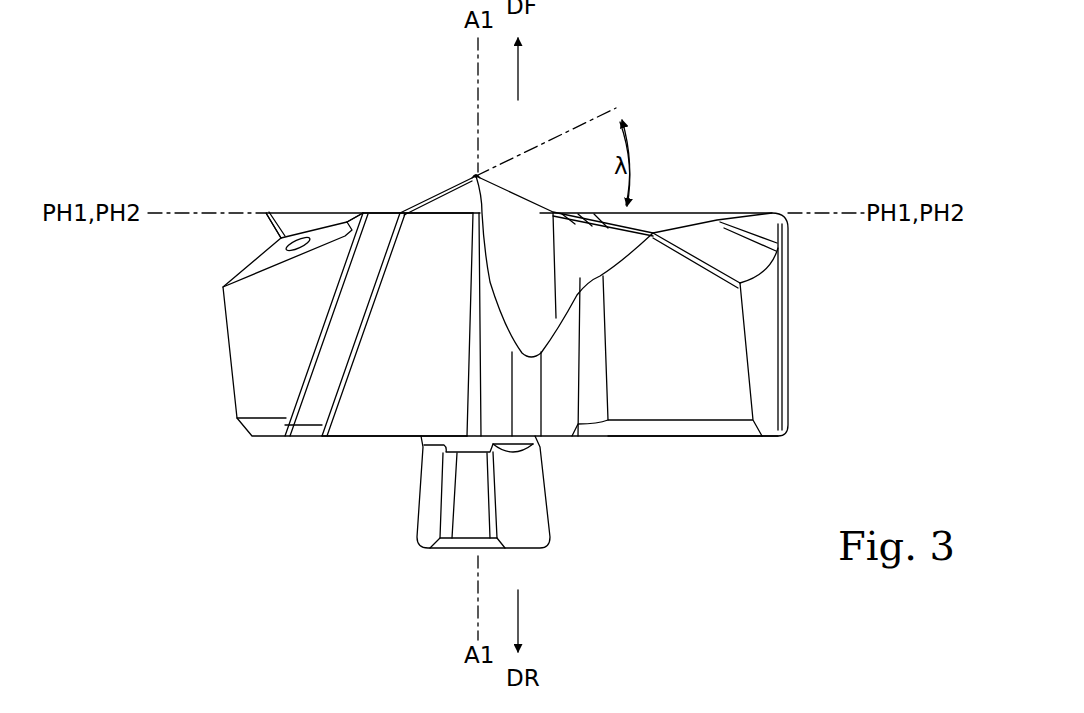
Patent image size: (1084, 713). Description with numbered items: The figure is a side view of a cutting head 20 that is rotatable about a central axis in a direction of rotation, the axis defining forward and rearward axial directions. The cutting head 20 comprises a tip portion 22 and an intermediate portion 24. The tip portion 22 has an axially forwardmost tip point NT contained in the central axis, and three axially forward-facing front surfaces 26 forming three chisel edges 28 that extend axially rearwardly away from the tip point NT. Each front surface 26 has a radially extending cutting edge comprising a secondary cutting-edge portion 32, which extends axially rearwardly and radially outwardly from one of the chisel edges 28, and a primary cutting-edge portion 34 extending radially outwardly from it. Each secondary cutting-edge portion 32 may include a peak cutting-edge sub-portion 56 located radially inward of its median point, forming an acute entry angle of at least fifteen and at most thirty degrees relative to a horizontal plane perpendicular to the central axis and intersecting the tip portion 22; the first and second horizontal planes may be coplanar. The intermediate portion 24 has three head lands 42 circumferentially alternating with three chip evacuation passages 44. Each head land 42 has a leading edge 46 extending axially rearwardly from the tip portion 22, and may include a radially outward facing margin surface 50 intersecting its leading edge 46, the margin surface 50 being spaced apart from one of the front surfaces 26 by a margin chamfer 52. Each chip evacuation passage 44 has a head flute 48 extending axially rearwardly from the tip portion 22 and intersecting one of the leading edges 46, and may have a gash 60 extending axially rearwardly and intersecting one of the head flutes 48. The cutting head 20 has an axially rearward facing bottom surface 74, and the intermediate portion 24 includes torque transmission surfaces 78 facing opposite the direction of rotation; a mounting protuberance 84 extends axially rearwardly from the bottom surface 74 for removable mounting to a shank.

The cutting head 20 is at (652, 133).
The tip portion 22 is at (698, 192).
The intermediate portion 24 is at (810, 325).
The front surface 26 is at (655, 225).
The chisel edge 28 is at (470, 173).
The secondary cutting-edge portion 32 is at (460, 187).
The primary cutting-edge portion 34 is at (268, 212).
The head land 42 is at (266, 322).
The chip evacuation passage 44 is at (421, 380).
The leading edge 46 is at (328, 405).
The head flute 48 is at (418, 266).
The margin surface 50 is at (322, 384).
The margin chamfer 52 is at (372, 209).
The peak cutting-edge sub-portion 56 is at (400, 212).
The gash 60 is at (564, 306).
The bottom surface 74 is at (686, 441).
The torque transmission surface 78 is at (667, 359).
The mounting protuberance 84 is at (522, 518).
The tip point NT is at (474, 172).